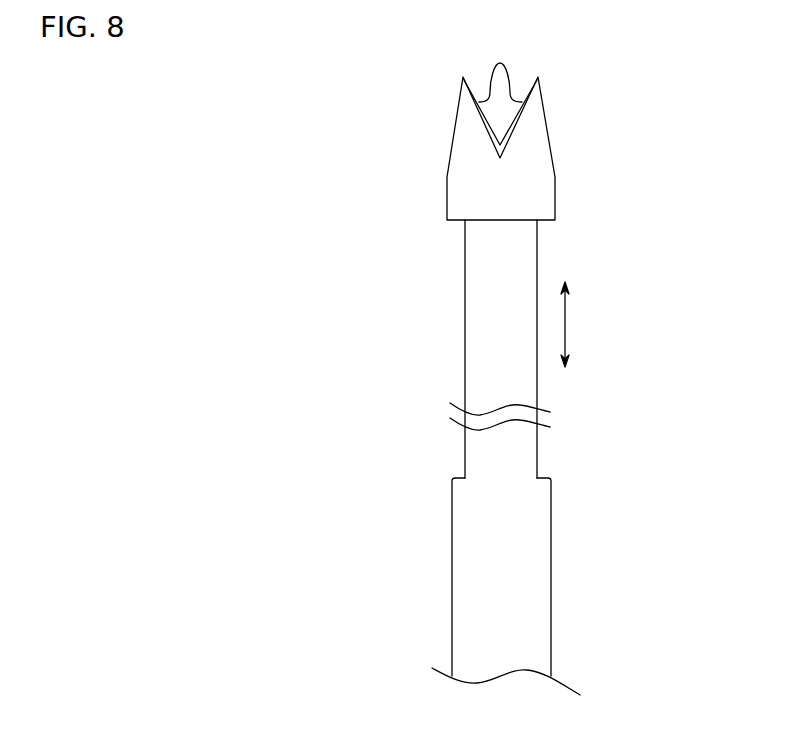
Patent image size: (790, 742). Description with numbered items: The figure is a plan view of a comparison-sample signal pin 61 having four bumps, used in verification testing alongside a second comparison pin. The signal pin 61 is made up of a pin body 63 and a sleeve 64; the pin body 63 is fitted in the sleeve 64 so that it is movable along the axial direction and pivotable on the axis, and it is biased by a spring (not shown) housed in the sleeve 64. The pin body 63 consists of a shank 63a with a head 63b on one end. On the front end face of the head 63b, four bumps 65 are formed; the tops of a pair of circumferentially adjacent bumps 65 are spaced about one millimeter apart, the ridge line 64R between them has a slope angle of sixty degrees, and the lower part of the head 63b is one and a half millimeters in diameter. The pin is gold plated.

The signal pin 61 is at (601, 230).
The pin body 63 is at (460, 288).
The shank 63a is at (470, 337).
The head 63b is at (446, 177).
The sleeve 64 is at (545, 598).
The ridge line 64R is at (499, 68).
The bumps 65 is at (458, 107).